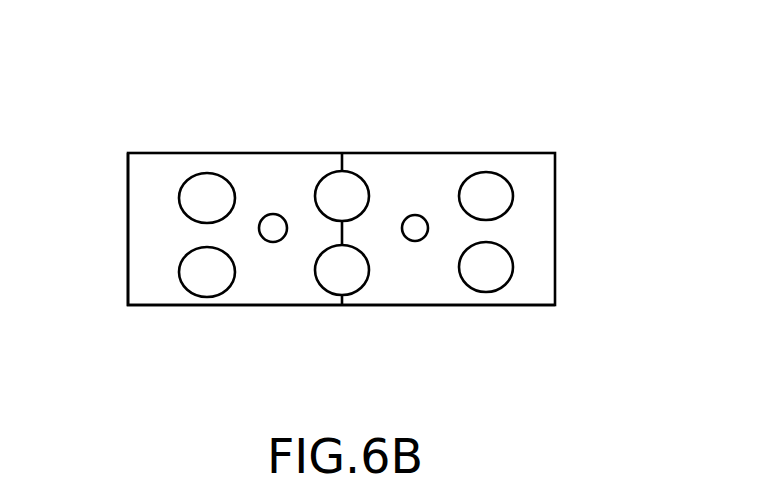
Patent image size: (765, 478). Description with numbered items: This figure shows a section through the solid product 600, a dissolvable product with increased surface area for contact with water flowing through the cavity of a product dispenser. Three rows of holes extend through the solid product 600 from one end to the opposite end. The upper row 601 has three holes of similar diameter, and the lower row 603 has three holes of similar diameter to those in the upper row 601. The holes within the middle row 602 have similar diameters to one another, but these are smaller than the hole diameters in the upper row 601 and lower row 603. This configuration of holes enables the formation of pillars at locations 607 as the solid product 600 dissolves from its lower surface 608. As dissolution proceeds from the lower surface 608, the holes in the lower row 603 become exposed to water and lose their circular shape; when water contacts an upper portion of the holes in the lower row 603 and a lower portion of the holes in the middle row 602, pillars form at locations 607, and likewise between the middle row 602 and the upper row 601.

The solid product 600 is at (495, 125).
The upper row of holes 601 is at (513, 184).
The middle row of holes 602 is at (428, 228).
The lower row of holes 603 is at (513, 262).
The pillar locations 607 is at (248, 207).
The lower surface 608 is at (163, 307).